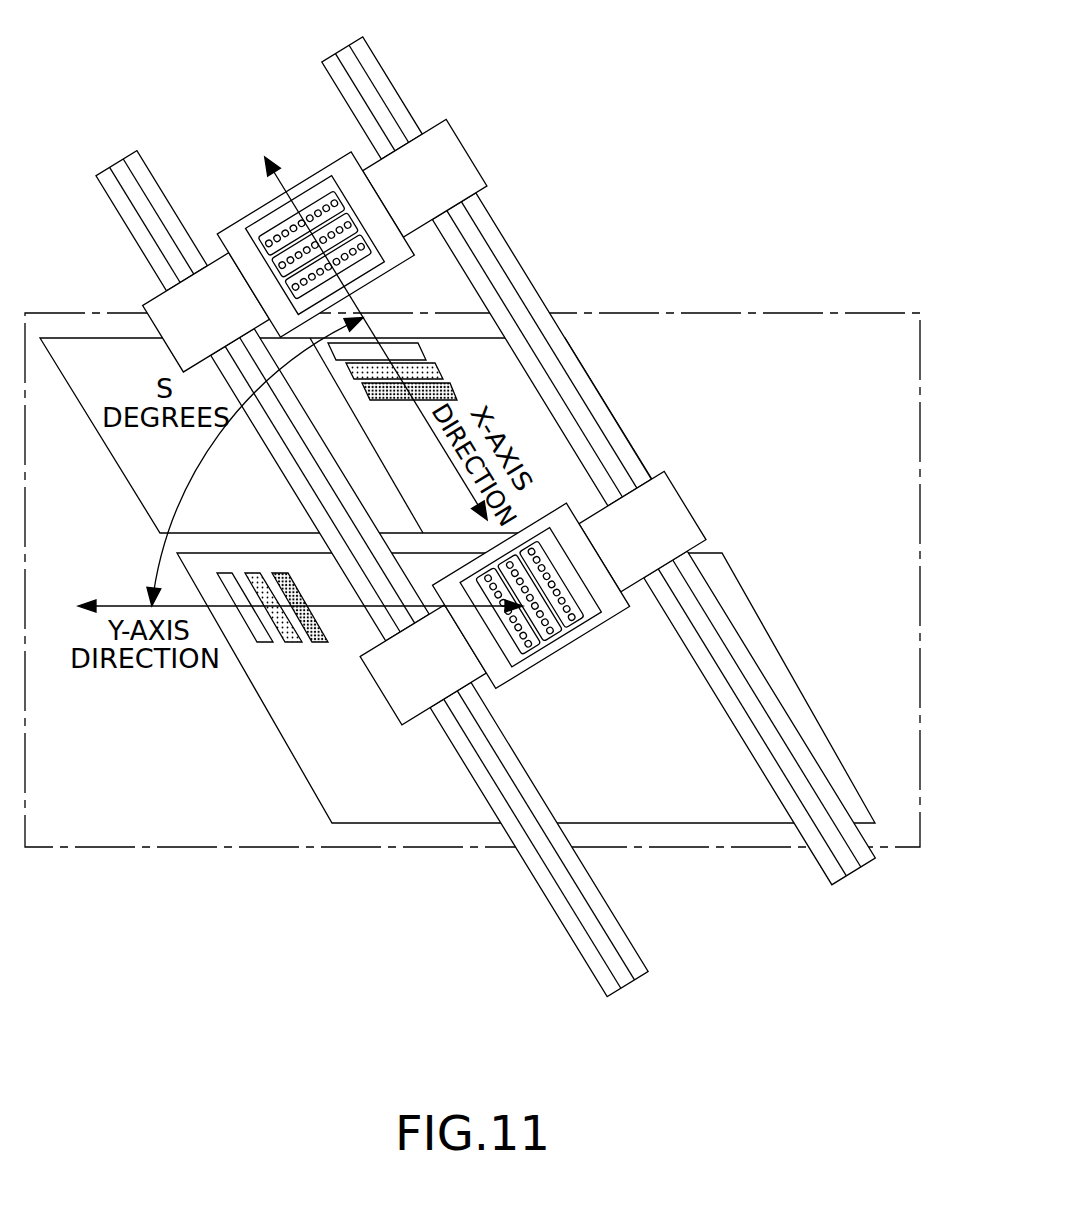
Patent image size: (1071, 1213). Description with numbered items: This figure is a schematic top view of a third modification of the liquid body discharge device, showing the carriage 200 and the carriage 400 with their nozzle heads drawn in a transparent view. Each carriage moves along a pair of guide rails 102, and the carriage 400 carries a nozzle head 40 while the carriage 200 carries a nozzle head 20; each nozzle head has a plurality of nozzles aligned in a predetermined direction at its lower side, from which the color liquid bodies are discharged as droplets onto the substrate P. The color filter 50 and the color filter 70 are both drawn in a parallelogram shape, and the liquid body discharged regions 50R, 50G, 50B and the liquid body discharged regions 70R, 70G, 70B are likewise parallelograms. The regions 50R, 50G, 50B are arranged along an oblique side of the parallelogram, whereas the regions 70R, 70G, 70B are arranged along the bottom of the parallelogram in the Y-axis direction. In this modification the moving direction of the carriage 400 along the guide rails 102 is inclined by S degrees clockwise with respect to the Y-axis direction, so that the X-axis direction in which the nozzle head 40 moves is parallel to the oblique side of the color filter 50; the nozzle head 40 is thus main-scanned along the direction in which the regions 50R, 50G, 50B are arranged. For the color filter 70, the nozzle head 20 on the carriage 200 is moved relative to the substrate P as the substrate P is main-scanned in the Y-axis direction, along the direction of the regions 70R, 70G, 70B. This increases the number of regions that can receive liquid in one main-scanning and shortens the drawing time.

The carriage 400 is at (317, 197).
The nozzle head 40 is at (312, 182).
The color filter 50 is at (612, 417).
The liquid body discharged region 50R is at (413, 352).
The liquid body discharged region 50G is at (425, 372).
The liquid body discharged region 50B is at (447, 390).
The carriage 200 is at (597, 630).
The nozzle head 20 is at (513, 655).
The color filter 70 is at (722, 822).
The liquid body discharged region 70R is at (265, 642).
The liquid body discharged region 70G is at (292, 643).
The liquid body discharged region 70B is at (320, 643).
The guide rail 102 is at (543, 875).
The substrate P is at (752, 312).